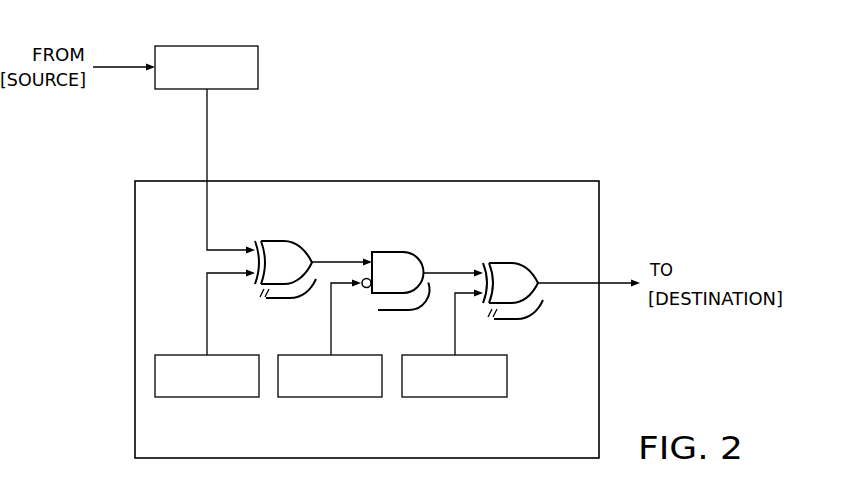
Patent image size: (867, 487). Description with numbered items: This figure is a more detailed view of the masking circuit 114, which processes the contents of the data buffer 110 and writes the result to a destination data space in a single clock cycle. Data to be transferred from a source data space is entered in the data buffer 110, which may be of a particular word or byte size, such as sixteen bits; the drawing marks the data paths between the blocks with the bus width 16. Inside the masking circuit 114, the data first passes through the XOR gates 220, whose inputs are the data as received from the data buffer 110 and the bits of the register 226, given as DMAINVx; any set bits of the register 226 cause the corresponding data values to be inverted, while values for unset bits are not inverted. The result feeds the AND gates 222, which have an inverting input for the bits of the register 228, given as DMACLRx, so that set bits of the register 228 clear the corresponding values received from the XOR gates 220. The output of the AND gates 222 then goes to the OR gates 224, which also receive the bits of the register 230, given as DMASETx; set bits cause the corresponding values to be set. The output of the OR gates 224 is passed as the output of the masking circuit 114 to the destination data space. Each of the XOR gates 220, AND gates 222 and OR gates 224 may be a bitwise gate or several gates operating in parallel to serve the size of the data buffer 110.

The data buffer 110 is at (194, 45).
The masking circuit 114 is at (448, 177).
The 16-bit data bus 16 is at (128, 58).
The XOR gates 220 is at (275, 240).
The AND gates 222 is at (393, 251).
The OR gates 224 is at (501, 261).
The register 226 is at (194, 398).
The register 228 is at (343, 398).
The register 230 is at (465, 398).